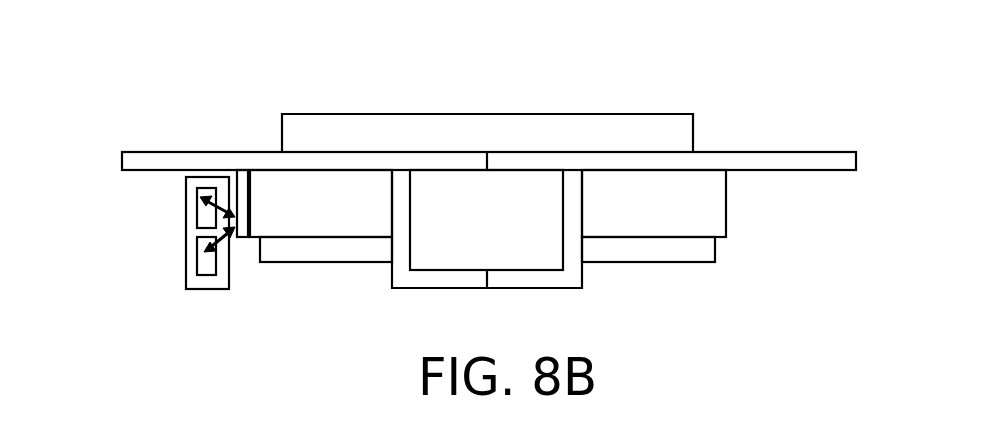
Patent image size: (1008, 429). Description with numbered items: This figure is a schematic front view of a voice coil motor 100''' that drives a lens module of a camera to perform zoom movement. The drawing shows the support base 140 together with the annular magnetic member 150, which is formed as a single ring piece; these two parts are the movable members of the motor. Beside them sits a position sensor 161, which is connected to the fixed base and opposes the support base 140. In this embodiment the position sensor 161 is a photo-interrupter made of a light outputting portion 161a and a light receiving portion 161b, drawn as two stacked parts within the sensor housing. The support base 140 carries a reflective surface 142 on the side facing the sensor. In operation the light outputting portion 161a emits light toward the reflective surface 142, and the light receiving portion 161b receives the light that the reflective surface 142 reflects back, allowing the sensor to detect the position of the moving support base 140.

The voice coil motor 100''' is at (458, 144).
The support base 140 is at (695, 199).
The reflective surface 142 is at (237, 198).
The annular magnetic member 150 is at (697, 254).
The position sensor 161 is at (185, 235).
The light outputting portion 161a is at (200, 193).
The light receiving portion 161b is at (200, 267).